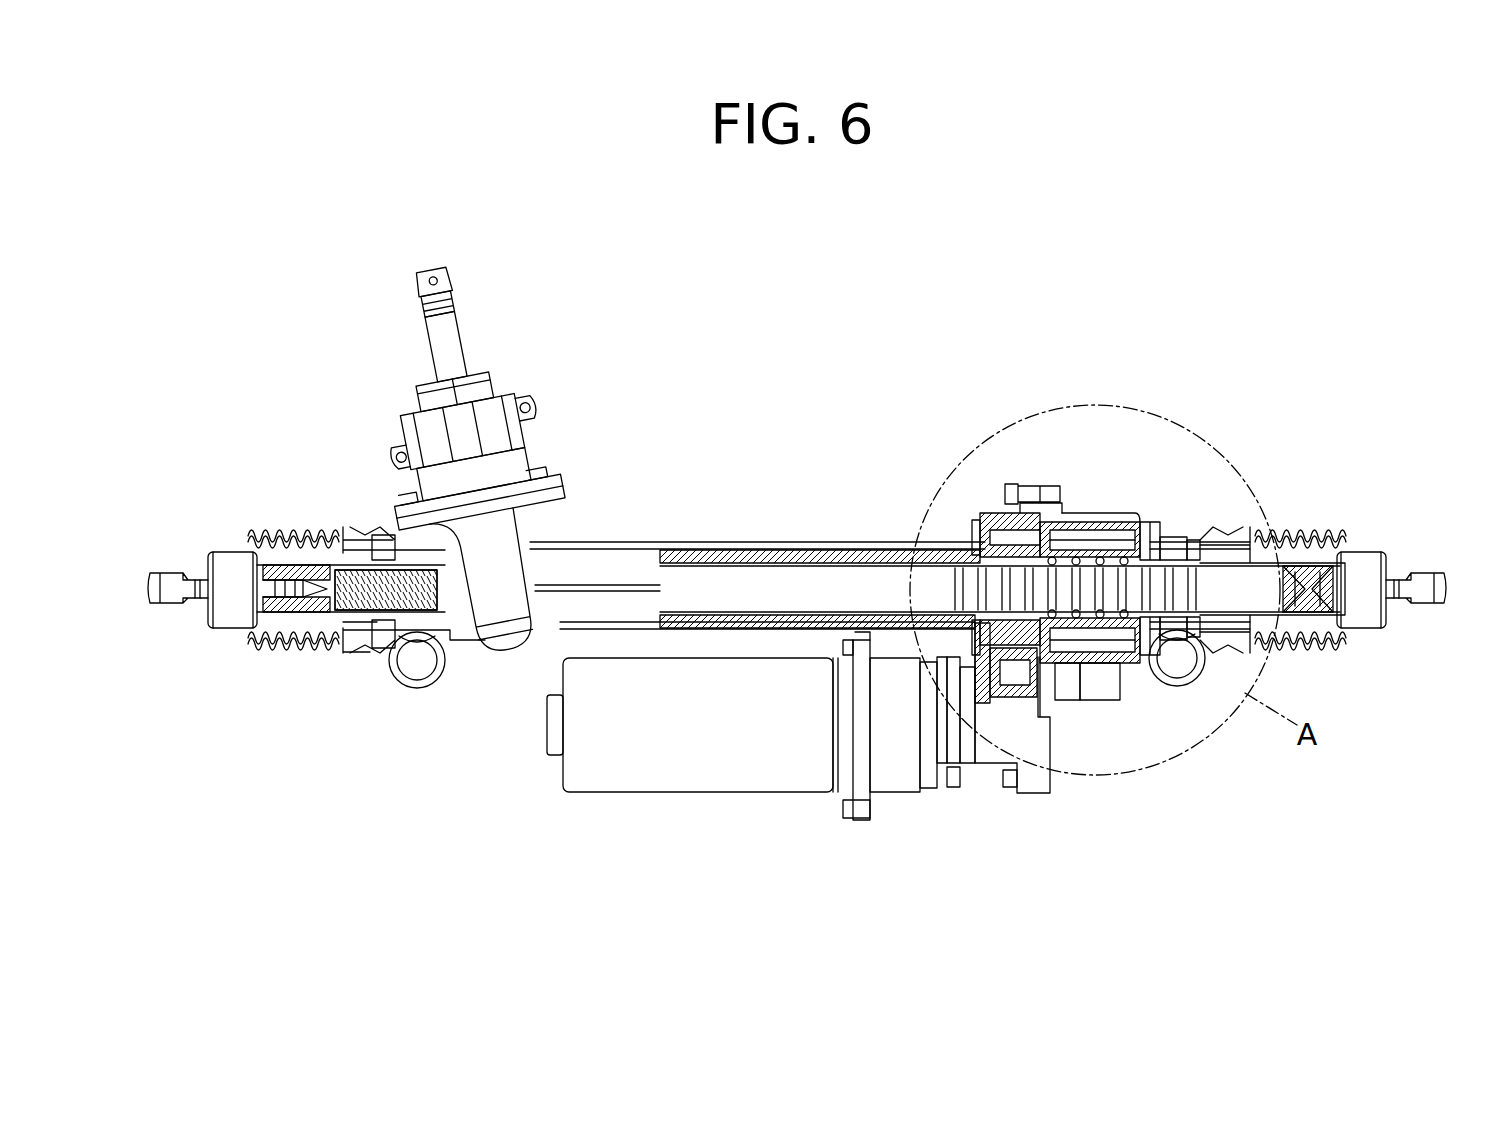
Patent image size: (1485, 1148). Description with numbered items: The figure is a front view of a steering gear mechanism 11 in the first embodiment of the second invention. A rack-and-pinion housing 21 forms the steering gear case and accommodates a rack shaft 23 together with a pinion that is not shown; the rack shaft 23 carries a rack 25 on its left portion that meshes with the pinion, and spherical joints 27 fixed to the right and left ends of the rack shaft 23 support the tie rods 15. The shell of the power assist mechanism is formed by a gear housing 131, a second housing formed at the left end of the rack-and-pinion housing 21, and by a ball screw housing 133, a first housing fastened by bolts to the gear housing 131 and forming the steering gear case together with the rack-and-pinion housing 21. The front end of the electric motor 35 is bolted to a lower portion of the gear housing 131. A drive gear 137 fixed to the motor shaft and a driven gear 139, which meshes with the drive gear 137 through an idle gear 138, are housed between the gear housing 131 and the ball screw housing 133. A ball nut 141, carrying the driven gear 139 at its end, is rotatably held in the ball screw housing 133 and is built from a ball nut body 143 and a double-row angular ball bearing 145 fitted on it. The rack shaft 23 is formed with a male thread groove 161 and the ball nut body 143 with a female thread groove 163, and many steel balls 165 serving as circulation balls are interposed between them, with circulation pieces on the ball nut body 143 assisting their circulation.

The steering gear mechanism 11 is at (844, 448).
The tie rod 15 is at (163, 578).
The rack-and-pinion housing 21 is at (633, 540).
The rack shaft 23 is at (775, 555).
The rack 25 is at (355, 555).
The spherical joint 27 is at (228, 552).
The electric motor 35 is at (718, 775).
The gear housing 131 is at (993, 513).
The ball screw housing 133 is at (1140, 523).
The drive gear 137 is at (985, 710).
The idle gear 138 is at (1052, 677).
The driven gear 139 is at (978, 547).
The ball nut 141 is at (1173, 520).
The ball nut body 143 is at (1140, 677).
The double-row angular ball bearing 145 is at (1100, 665).
The male thread groove 161 is at (1203, 647).
The female thread groove 163 is at (1040, 503).
The steel balls 165 is at (1087, 523).